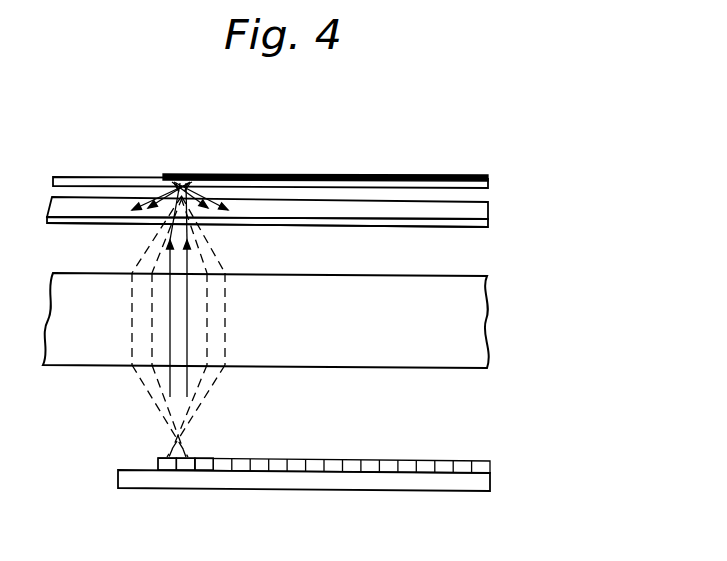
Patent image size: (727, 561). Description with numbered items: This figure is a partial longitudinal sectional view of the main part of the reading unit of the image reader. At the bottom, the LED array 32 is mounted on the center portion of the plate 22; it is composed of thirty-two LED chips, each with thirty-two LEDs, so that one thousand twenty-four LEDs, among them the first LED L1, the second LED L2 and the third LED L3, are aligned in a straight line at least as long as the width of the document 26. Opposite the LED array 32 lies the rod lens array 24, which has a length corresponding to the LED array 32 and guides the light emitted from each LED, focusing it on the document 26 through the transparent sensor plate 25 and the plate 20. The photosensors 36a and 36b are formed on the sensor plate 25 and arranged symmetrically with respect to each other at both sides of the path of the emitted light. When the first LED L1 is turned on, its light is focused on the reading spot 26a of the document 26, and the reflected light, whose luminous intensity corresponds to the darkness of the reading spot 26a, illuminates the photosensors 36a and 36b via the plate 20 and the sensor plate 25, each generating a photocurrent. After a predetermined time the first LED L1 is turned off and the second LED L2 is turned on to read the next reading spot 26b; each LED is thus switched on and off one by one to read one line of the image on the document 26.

The plate 20 is at (489, 183).
The plate 22 is at (490, 482).
The rod lens array 24 is at (484, 331).
The sensor plate 25 is at (488, 208).
The document 26 is at (349, 175).
The reading spot 26a is at (166, 173).
The reading spot 26b is at (191, 173).
The LED array 32 is at (490, 464).
The photosensor 36a is at (344, 236).
The photosensor 36b is at (490, 226).
The first LED L1 is at (167, 471).
The second LED L2 is at (187, 471).
The third LED L3 is at (205, 471).